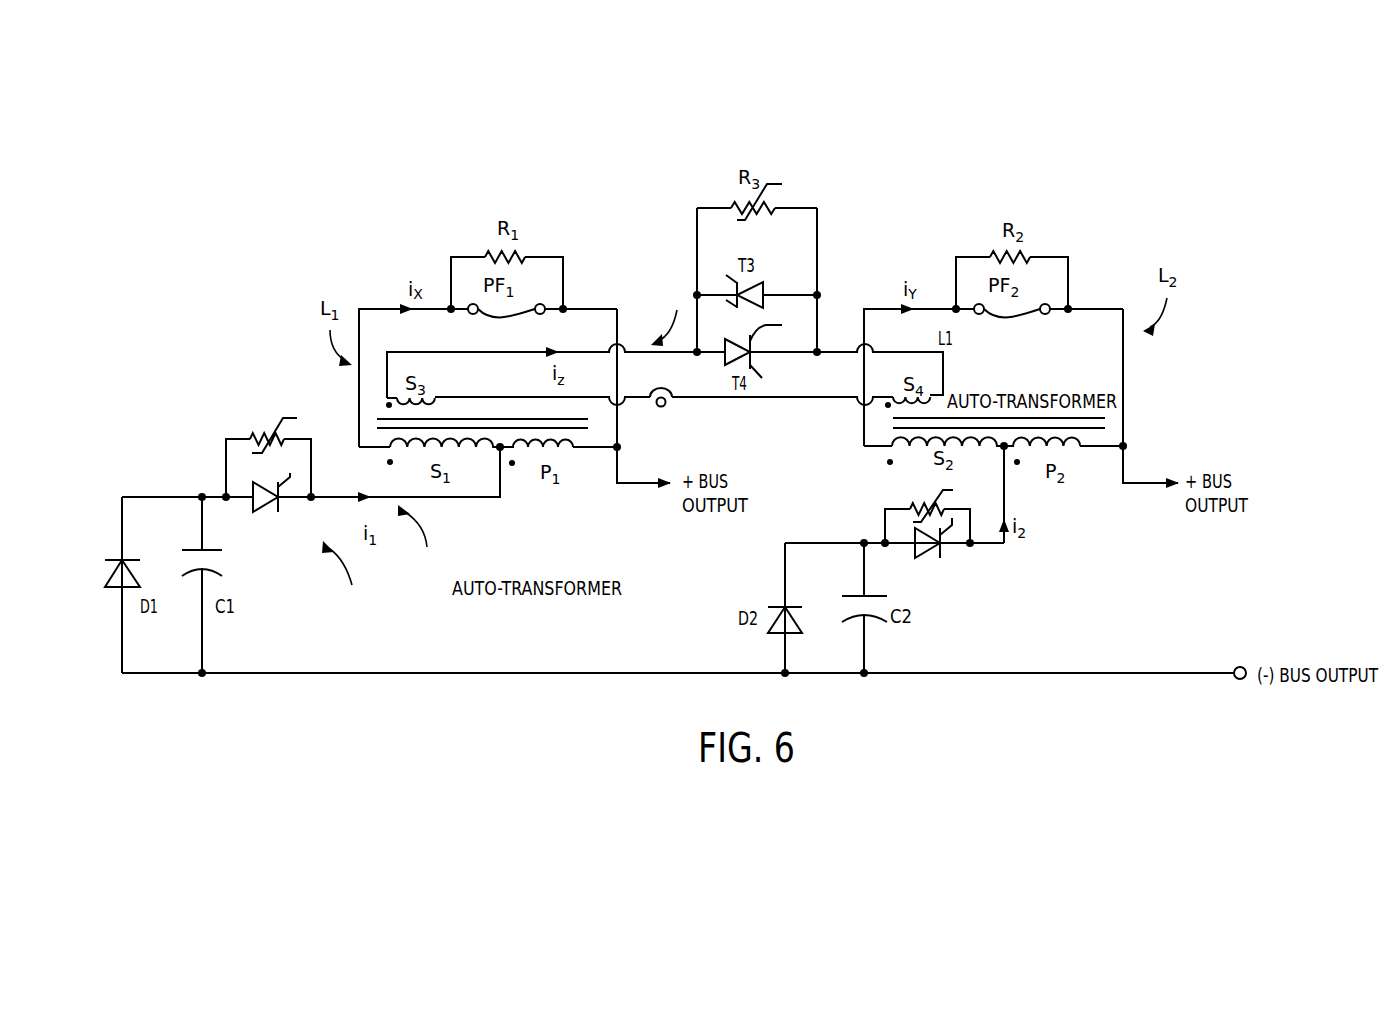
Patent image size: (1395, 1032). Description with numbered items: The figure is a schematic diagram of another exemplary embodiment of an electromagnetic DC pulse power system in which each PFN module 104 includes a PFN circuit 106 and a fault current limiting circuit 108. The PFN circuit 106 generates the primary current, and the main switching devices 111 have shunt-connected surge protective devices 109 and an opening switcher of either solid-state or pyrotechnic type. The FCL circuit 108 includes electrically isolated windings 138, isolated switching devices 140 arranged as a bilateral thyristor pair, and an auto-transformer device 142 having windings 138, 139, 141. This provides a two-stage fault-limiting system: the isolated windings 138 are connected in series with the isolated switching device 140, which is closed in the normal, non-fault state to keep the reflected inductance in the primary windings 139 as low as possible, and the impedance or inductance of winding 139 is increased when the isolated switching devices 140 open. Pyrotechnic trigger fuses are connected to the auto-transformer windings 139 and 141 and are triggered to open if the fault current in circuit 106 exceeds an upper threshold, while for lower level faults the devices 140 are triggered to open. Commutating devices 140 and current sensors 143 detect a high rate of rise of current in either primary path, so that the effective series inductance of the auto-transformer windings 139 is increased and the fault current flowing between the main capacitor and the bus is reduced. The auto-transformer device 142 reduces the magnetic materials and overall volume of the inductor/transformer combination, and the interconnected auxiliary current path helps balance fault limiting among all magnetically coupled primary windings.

The PFN module 104 is at (243, 557).
The PFN circuit 106 is at (405, 512).
The fault current limiting circuit 108 is at (741, 268).
The surge protective device 109 is at (262, 393).
The main switching device 111 is at (958, 630).
The electrically isolated winding 138 is at (900, 396).
The primary winding 139 is at (1082, 450).
The isolated switching device 140 is at (765, 333).
The secondary winding 141 is at (908, 450).
The auto-transformer device 142 is at (990, 450).
The current sensor 143 is at (663, 407).